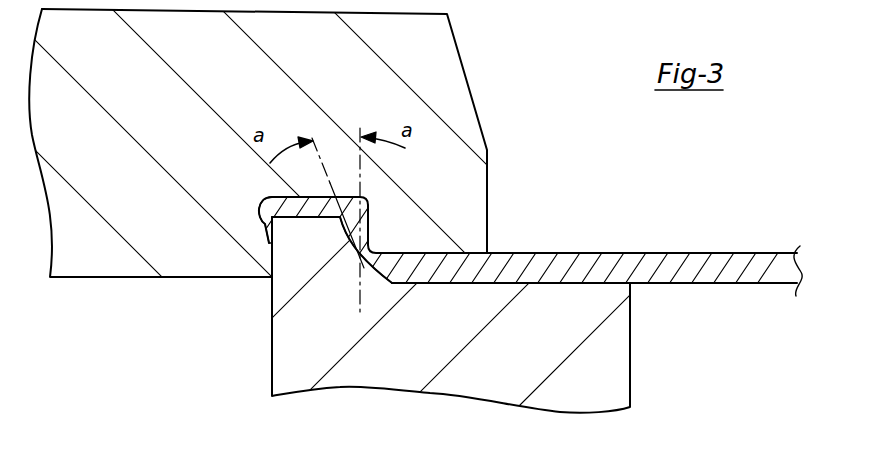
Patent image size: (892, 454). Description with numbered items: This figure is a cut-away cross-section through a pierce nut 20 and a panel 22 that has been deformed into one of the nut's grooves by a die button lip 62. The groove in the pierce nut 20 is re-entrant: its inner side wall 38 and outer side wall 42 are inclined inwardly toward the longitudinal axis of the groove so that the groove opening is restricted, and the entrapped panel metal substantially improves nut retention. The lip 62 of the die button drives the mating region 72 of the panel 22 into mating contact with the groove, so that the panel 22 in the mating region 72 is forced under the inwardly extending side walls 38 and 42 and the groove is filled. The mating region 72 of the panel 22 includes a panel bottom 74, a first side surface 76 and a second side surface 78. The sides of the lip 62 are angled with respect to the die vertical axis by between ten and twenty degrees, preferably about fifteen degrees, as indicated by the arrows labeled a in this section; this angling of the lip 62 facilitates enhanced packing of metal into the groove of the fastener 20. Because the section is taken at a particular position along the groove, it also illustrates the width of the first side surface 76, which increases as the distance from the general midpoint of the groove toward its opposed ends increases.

The pierce nut 20 is at (160, 134).
The panel 22 is at (695, 268).
The inner side wall 38 is at (273, 281).
The outer side wall 42 is at (383, 281).
The lip 62 is at (312, 256).
The mating region 72 is at (255, 205).
The panel bottom 74 is at (278, 196).
The first side surface 76 is at (372, 208).
The second side surface 78 is at (267, 225).